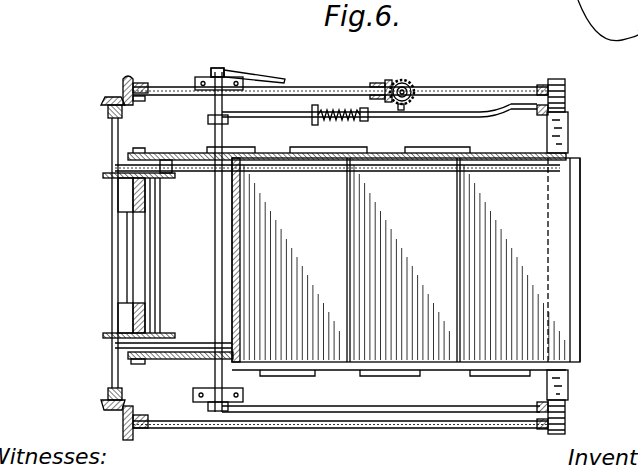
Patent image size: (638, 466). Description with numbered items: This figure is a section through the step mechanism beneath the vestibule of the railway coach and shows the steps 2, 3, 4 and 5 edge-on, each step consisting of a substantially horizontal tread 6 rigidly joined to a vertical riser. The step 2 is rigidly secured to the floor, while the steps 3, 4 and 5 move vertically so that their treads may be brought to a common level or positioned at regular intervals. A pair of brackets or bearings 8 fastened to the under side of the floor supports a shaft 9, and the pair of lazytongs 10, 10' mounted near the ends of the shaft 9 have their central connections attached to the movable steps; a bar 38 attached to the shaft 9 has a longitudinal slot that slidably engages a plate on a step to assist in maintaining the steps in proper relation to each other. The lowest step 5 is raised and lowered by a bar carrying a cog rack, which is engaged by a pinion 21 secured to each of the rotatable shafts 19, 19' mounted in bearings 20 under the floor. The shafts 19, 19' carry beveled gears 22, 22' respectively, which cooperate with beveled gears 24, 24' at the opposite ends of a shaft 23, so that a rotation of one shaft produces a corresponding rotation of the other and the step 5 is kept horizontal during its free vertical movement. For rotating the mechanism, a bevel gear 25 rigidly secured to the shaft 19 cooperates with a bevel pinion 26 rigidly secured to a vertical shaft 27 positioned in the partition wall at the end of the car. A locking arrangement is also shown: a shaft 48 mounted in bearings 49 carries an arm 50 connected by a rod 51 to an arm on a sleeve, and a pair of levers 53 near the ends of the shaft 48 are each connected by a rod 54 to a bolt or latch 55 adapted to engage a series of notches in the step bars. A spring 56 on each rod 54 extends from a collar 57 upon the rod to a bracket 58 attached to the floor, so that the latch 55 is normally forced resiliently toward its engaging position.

The step 2 is at (240, 226).
The step 3 is at (352, 222).
The step 4 is at (462, 226).
The step 5 is at (578, 228).
The tread 6 is at (291, 262).
The brackets or bearings 8 is at (126, 197).
The shaft 9 is at (130, 230).
The lazytongs 10 is at (340, 146).
The lower plate 10' is at (340, 370).
The rotatable shaft 19 is at (340, 110).
The rotatable shaft 19' is at (340, 441).
The bearings 20 is at (381, 80).
The pinion 21 is at (560, 79).
The beveled gear 22 is at (128, 71).
The beveled gear 22' is at (117, 428).
The shaft 23 is at (112, 263).
The beveled gear 24 is at (97, 94).
The beveled gear 24' is at (92, 401).
The bevel gear 25 is at (406, 80).
The bevel pinion 26 is at (411, 86).
The vertical shaft 27 is at (401, 110).
The bar 38 is at (192, 178).
The shaft 48 is at (215, 230).
The bearings 49 is at (197, 77).
The arm 50 is at (224, 70).
The rod 51 is at (278, 77).
The levers 53 is at (208, 121).
The rod 54 is at (476, 112).
The bolt or latch 55 is at (537, 88).
The spring 56 is at (340, 110).
The collar 57 is at (366, 121).
The bracket 58 is at (315, 105).